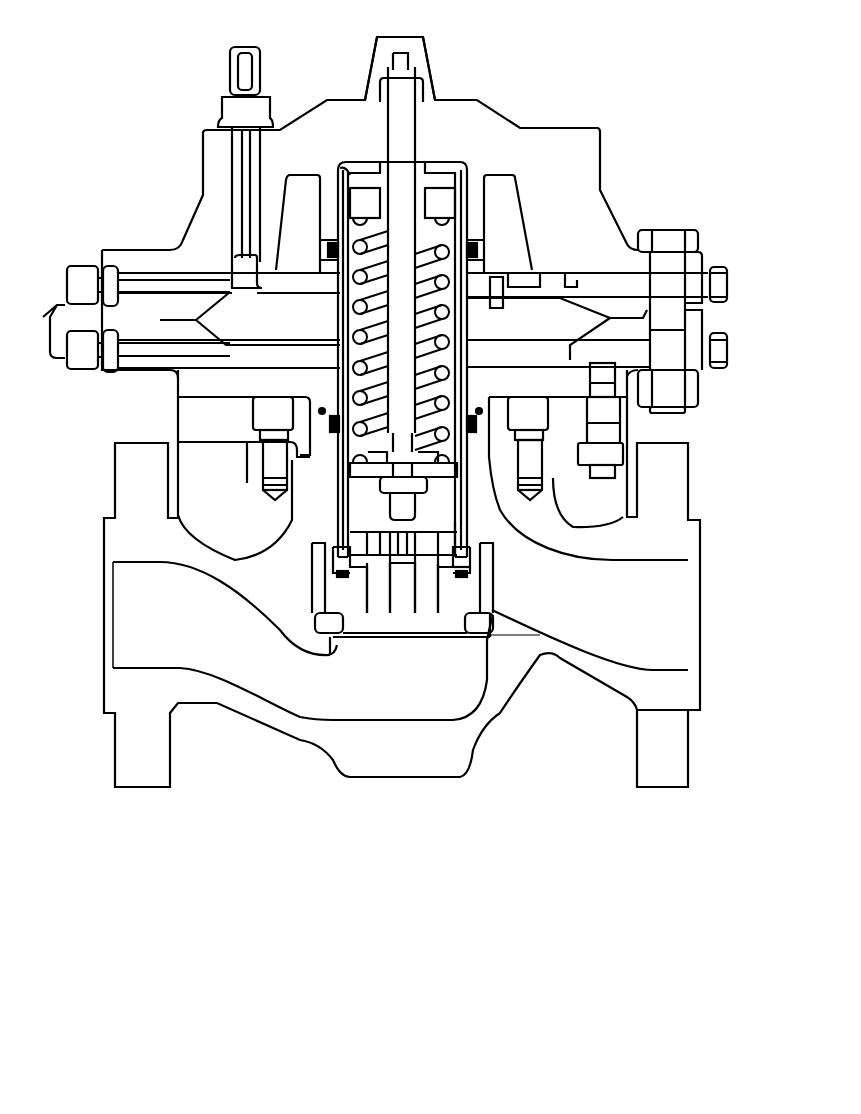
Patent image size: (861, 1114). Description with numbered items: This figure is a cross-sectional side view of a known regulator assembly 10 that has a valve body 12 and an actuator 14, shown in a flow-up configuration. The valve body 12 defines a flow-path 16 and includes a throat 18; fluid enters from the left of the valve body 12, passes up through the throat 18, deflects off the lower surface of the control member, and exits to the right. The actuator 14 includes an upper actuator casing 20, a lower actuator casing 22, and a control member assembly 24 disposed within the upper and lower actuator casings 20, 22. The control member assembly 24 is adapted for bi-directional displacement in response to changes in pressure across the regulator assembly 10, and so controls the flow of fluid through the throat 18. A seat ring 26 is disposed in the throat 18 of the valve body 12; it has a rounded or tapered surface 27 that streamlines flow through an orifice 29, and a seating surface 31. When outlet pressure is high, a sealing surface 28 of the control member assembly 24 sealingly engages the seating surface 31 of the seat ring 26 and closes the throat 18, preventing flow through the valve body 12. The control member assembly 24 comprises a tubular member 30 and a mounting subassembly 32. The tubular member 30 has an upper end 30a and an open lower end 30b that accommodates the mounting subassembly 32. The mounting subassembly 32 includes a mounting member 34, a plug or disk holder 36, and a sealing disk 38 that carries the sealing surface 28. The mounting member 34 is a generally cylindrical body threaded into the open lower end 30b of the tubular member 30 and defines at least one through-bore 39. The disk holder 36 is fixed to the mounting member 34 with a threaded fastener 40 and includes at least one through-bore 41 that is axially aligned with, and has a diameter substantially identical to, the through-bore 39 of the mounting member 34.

The regulator assembly 10 is at (624, 73).
The valve body 12 is at (702, 748).
The actuator 14 is at (605, 157).
The flow-path 16 is at (152, 627).
The throat 18 is at (404, 638).
The upper actuator casing 20 is at (697, 258).
The lower actuator casing 22 is at (702, 326).
The control member assembly 24 is at (472, 352).
The seat ring 26 is at (368, 640).
The rounded or tapered surface 27 is at (338, 640).
The sealing surface 28 is at (466, 582).
The orifice 29 is at (453, 620).
The tubular member 30 is at (336, 348).
The upper end 30a is at (352, 172).
The lower end 30b is at (458, 523).
The seating surface 31 is at (466, 612).
The mounting subassembly 32 is at (446, 529).
The mounting member 34 is at (360, 537).
The disk holder 36 is at (434, 588).
The sealing disk 38 is at (475, 573).
The through-bore 39 is at (380, 537).
The fastener 40 is at (400, 564).
The through-bore 41 is at (380, 555).